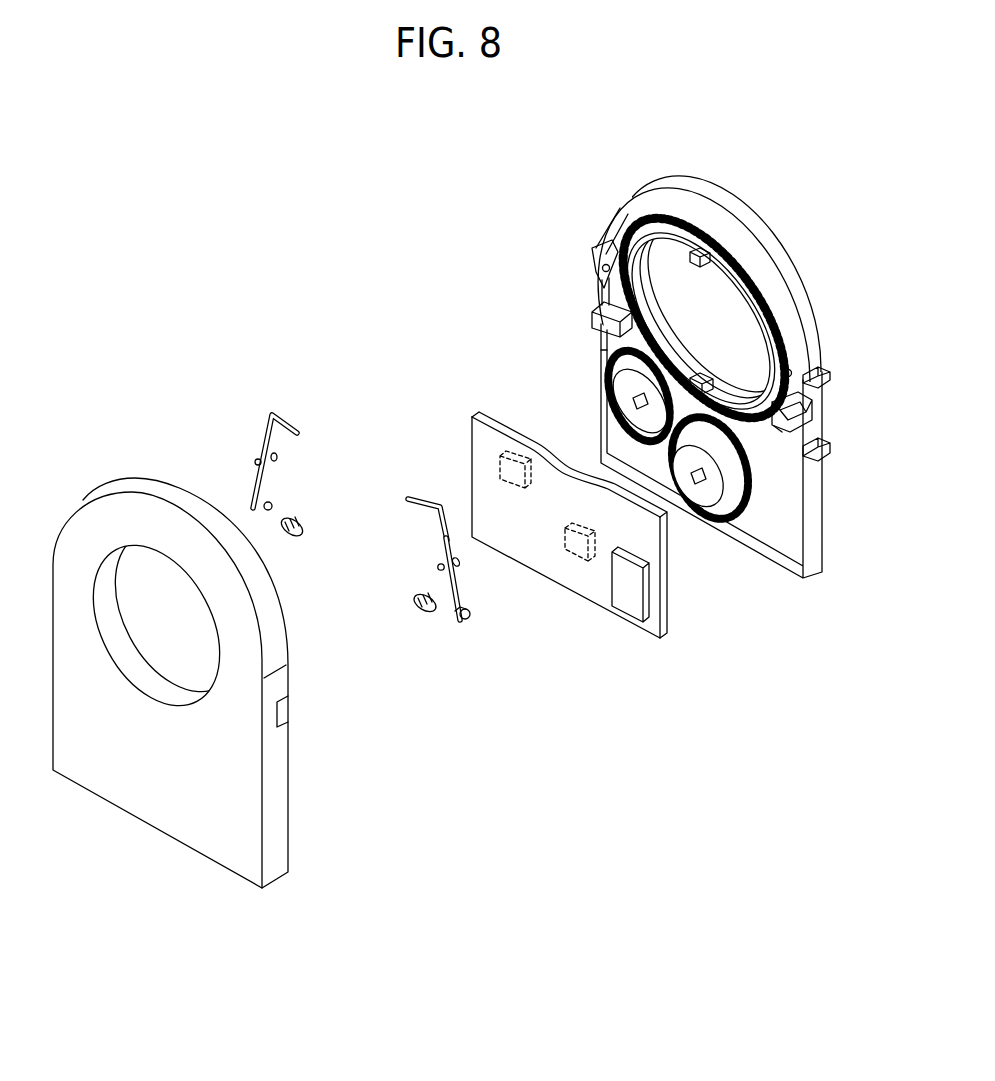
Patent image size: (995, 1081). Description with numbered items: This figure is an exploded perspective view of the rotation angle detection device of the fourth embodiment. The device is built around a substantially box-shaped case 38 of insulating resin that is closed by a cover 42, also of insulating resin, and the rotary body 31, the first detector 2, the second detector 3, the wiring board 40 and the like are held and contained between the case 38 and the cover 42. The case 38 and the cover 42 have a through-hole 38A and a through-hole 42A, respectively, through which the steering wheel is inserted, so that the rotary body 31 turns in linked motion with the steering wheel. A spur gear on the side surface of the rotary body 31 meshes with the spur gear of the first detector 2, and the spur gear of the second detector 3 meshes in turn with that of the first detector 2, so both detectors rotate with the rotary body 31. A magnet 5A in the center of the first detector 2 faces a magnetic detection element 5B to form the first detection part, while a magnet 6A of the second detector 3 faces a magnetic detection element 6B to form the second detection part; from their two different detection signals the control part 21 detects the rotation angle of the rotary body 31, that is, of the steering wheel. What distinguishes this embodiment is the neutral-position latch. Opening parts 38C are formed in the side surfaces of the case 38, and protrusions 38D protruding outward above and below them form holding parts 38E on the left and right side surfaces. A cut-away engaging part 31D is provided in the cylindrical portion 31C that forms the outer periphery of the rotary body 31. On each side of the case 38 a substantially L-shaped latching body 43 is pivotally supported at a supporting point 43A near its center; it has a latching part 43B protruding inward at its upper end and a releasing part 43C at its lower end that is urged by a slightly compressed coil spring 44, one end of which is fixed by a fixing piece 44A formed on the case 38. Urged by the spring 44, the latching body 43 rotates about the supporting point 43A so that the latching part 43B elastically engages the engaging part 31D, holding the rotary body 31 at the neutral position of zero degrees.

The first detector 2 is at (603, 360).
The second detector 3 is at (709, 503).
The magnet 5A is at (636, 404).
The magnetic detection element 5B is at (504, 454).
The magnet 6A is at (697, 487).
The magnetic detection element 6B is at (578, 582).
The control part 21 is at (632, 605).
The rotary body 31 is at (732, 306).
The cylindrical portion 31C is at (740, 312).
The cut-away engaging part 31D is at (770, 304).
The case 38 is at (724, 385).
The through-hole 38A is at (668, 262).
The opening part 38C is at (810, 410).
The protrusion 38D is at (817, 377).
The holding part 38E is at (820, 440).
The wiring board 40 is at (589, 528).
The cover 42 is at (170, 660).
The through-hole 42A is at (136, 570).
The latching body 43 is at (407, 546).
The supporting point 43A is at (440, 570).
The latching part 43B is at (413, 500).
The releasing part 43C is at (465, 622).
The spring 44 is at (425, 612).
The fixing piece 44A is at (779, 432).